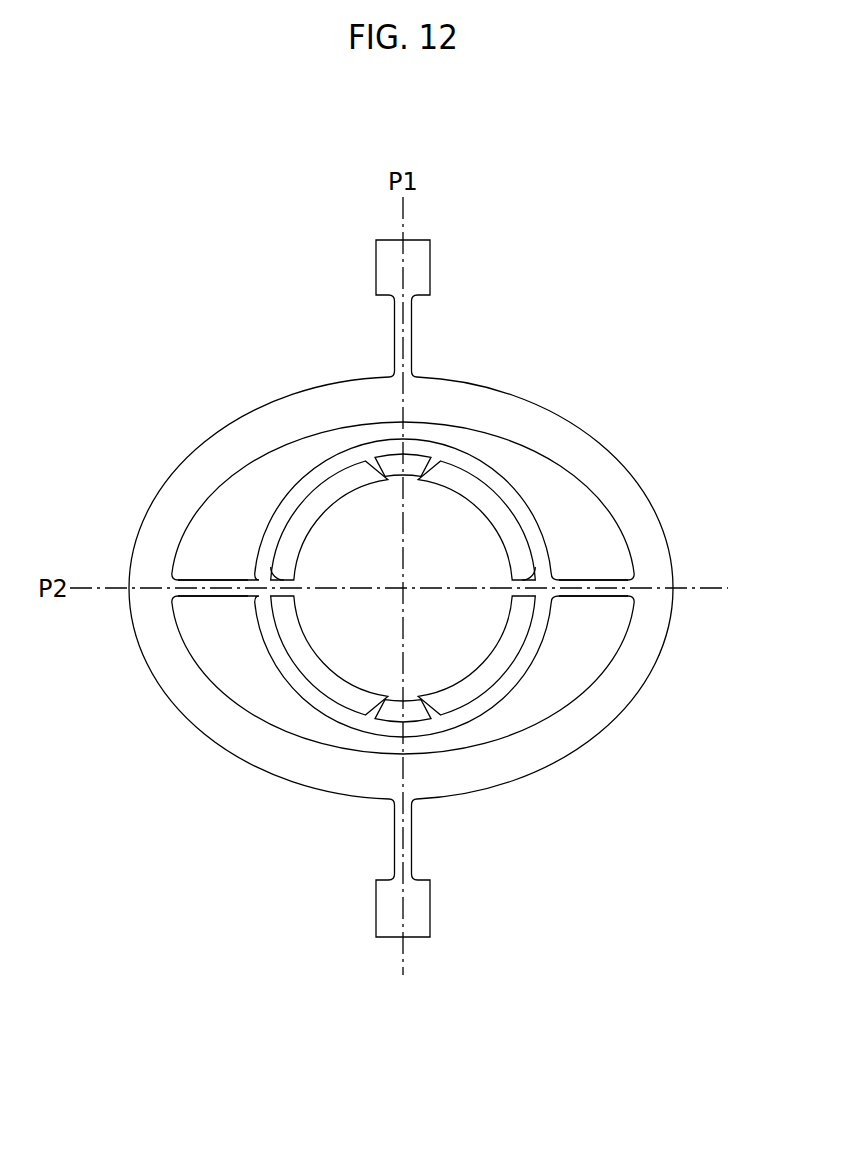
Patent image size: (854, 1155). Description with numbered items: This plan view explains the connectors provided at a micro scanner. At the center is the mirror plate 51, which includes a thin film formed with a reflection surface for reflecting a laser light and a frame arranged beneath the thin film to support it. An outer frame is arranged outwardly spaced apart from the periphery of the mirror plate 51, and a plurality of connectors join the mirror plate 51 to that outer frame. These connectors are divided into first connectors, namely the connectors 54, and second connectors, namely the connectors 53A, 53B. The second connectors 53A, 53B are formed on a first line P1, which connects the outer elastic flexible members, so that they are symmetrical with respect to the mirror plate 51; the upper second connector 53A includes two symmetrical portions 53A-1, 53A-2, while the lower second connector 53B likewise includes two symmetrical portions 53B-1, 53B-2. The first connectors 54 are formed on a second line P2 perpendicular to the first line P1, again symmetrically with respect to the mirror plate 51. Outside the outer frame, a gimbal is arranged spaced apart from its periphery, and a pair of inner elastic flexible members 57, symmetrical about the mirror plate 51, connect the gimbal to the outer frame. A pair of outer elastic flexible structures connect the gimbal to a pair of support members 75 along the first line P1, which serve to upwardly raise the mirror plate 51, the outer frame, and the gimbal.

The mirror plate 51 is at (465, 530).
The second connector 53A is at (521, 374).
The symmetrical portion of second connector 53A 53A-1 is at (408, 472).
The symmetrical portion of second connector 53A 53A-2 is at (432, 472).
The second connector 53B is at (521, 803).
The symmetrical portion of second connector 53B 53B-1 is at (412, 715).
The symmetrical portion of second connector 53B 53B-2 is at (440, 708).
The first connector 54 is at (268, 562).
The inner elastic flexible member 57 is at (222, 598).
The support member 75 is at (417, 257).